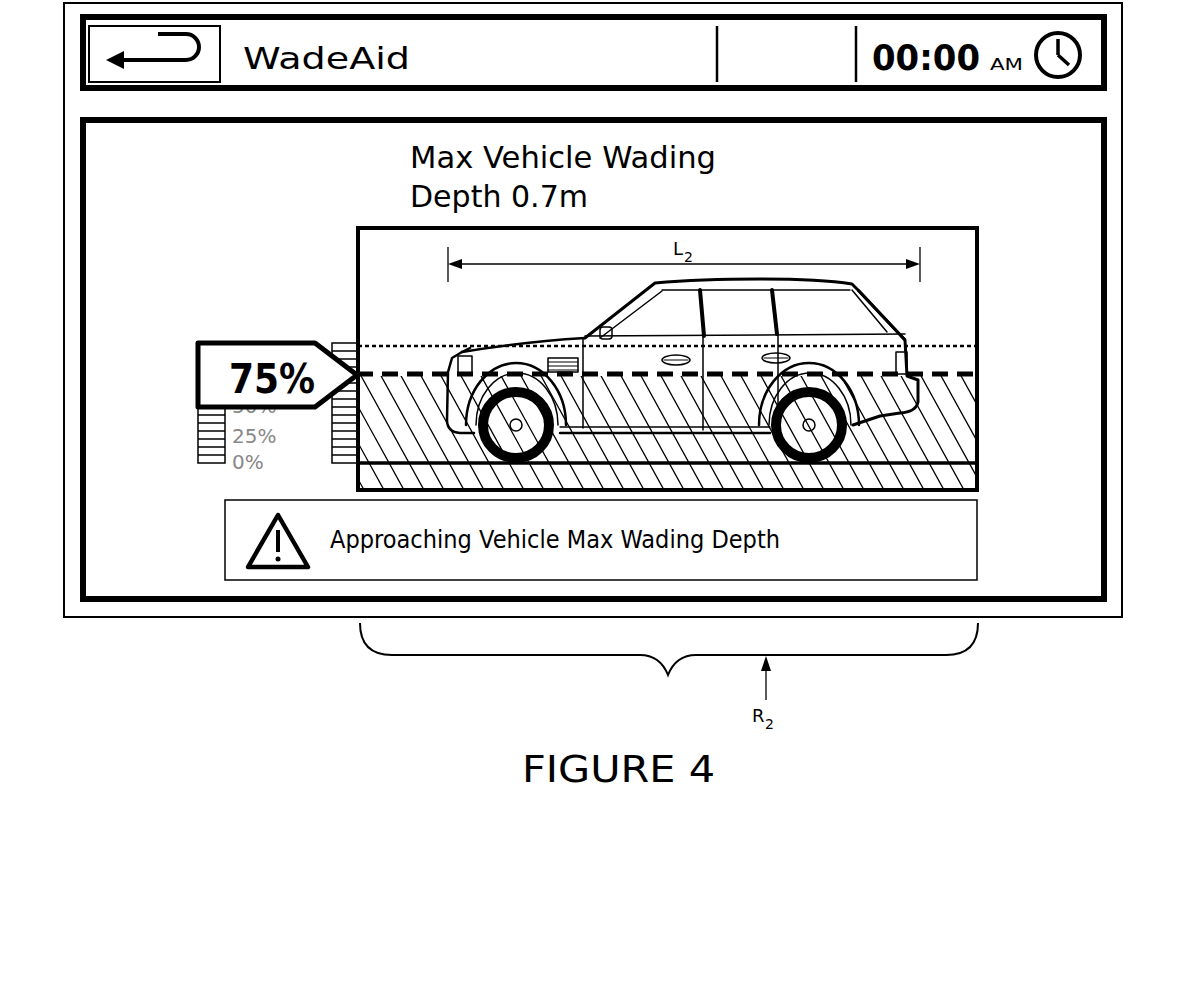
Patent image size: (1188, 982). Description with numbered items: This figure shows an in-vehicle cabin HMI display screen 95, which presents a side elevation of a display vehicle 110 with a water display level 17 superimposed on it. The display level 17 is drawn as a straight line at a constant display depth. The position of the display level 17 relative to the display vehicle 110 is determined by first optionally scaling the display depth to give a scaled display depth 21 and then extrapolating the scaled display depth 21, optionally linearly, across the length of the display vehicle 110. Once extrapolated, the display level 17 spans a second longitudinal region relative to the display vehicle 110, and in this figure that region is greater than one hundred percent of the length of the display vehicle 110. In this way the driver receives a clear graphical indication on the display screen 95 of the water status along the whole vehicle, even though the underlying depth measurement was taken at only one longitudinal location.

The display screen 95 is at (1088, 637).
The display level 17 is at (379, 371).
The scaled display depth 21 is at (620, 362).
The display vehicle 110 is at (877, 311).